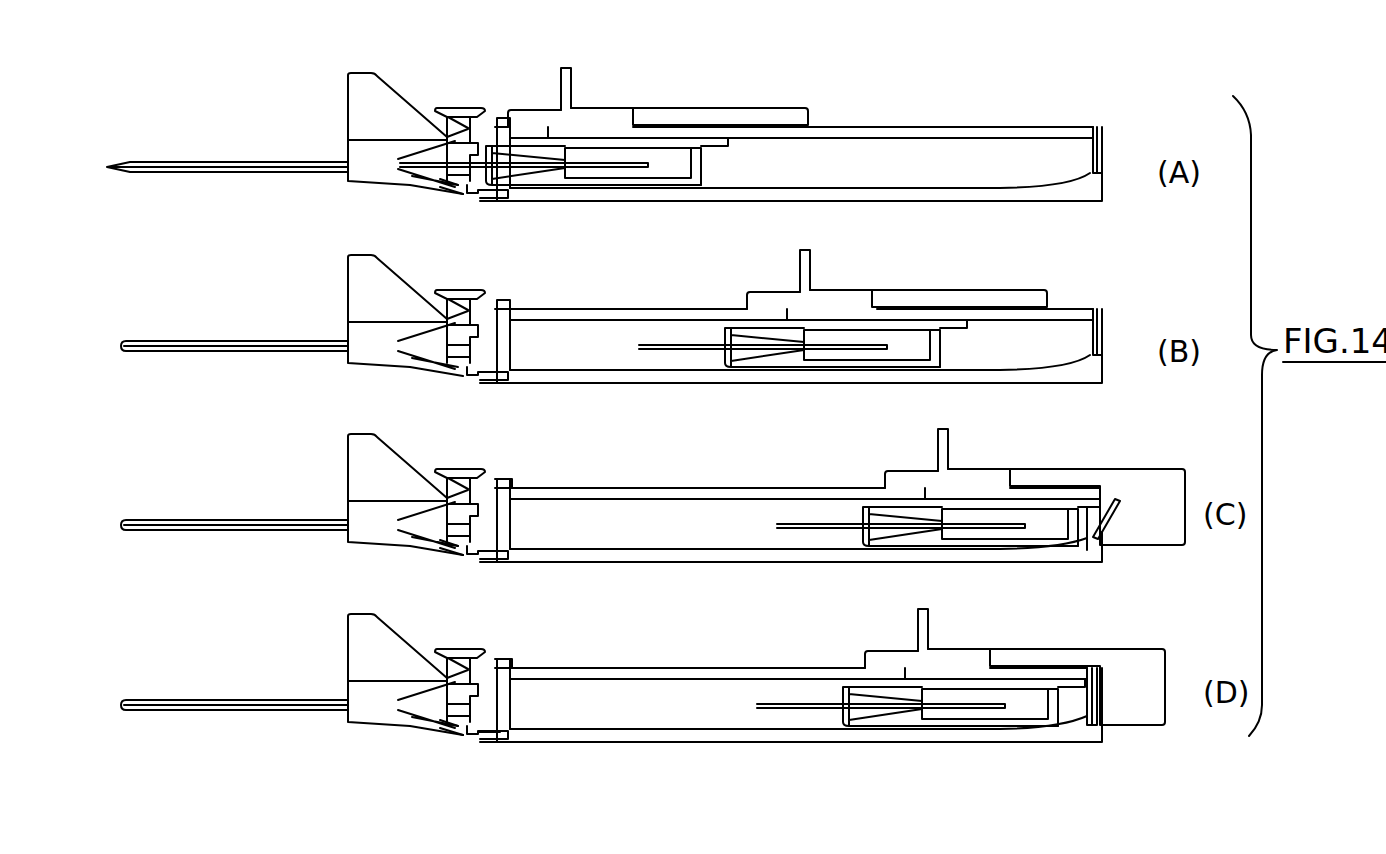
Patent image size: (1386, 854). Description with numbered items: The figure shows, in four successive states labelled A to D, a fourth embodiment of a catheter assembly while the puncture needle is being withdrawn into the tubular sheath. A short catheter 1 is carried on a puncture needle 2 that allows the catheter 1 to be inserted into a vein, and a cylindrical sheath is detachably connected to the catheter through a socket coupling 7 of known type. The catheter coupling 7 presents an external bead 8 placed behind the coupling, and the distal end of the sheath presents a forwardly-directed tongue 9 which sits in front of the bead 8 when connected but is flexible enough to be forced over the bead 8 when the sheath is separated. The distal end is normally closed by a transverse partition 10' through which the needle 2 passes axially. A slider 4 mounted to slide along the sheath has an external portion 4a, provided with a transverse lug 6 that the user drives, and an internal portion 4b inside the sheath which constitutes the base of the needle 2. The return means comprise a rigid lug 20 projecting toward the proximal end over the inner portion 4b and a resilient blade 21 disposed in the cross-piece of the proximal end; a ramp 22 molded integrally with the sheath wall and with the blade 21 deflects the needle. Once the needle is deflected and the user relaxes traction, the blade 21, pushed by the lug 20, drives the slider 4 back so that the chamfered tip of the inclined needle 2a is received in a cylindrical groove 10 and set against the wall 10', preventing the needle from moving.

The short catheter 1 is at (238, 160).
The puncture needle 2 is at (602, 157).
The chamfered tip of the inclined needle 2a is at (537, 503).
The slider 4 is at (717, 109).
The external portion of the slider 4a is at (757, 118).
The internal portion of the slider 4b is at (668, 165).
The transverse lug 6 is at (562, 75).
The socket coupling 7 is at (420, 138).
The external bead 8 is at (468, 112).
The forwardly-directed tongue 9 is at (460, 113).
The cylindrical groove 10 is at (472, 462).
The transverse partition 10' is at (424, 476).
The rigid lug 20 is at (713, 150).
The resilient blade 21 is at (1105, 160).
The ramp 22 is at (1047, 187).